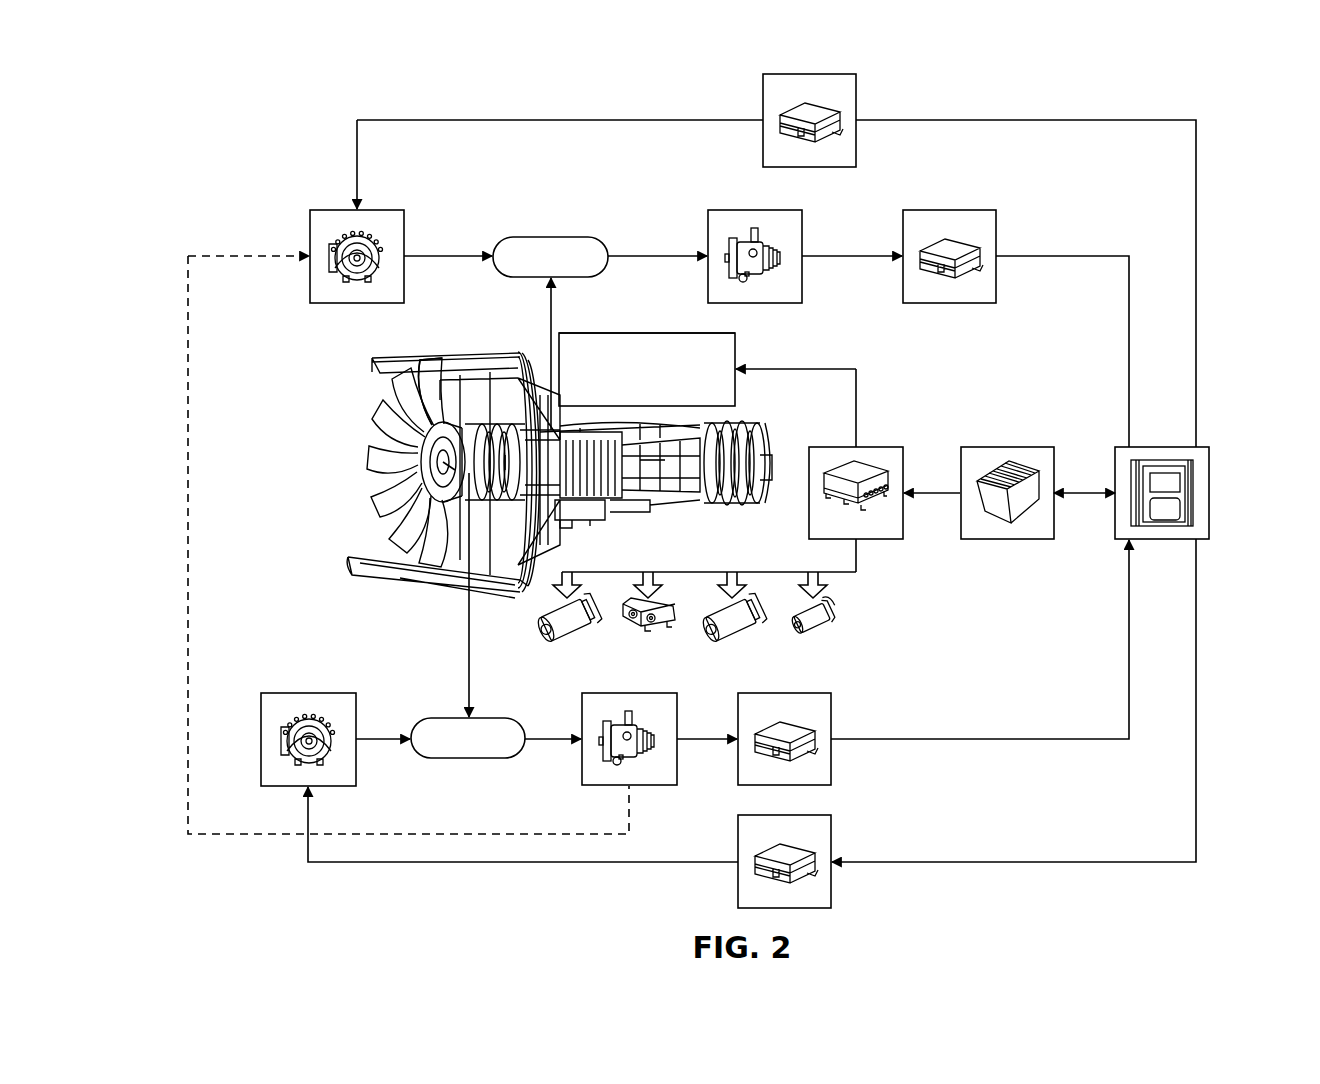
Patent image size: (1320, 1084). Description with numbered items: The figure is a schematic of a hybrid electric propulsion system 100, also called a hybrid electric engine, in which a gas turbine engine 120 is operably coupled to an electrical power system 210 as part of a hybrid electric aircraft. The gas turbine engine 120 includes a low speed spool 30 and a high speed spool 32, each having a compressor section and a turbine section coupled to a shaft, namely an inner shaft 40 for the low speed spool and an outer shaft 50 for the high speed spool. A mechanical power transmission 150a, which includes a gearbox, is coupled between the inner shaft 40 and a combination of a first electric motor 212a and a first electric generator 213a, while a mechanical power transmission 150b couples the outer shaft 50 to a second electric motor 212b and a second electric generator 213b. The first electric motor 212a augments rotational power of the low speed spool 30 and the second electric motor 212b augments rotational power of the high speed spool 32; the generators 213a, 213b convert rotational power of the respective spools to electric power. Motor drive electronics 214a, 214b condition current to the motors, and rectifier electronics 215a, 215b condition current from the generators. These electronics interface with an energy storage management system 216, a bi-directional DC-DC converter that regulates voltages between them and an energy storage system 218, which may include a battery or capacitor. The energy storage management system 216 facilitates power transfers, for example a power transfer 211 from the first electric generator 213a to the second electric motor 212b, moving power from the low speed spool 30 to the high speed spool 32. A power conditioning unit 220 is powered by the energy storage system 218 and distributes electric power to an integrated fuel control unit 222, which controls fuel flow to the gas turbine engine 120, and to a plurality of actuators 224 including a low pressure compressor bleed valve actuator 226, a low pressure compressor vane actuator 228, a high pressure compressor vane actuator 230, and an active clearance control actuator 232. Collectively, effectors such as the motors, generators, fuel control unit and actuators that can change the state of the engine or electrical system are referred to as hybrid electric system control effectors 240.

The hybrid electric propulsion system 100 is at (287, 120).
The gas turbine engine 120 is at (287, 358).
The outer shaft 50 is at (450, 405).
The low speed spool 30 is at (501, 462).
The inner shaft 40 is at (453, 473).
The high speed spool 32 is at (652, 467).
The mechanical power transmission 150a is at (446, 718).
The mechanical power transmission 150b is at (557, 237).
The electrical power system 210 is at (618, 318).
The power transfer 211 is at (183, 304).
The first electric motor 212a is at (283, 693).
The second electric motor 212b is at (322, 209).
The first electric generator 213a is at (582, 772).
The second electric generator 213b is at (748, 210).
The motor drive electronics 214a is at (845, 832).
The motor drive electronics 214b is at (790, 74).
The rectifier electronics 215a is at (845, 710).
The rectifier electronics 215b is at (942, 210).
The energy storage management system 216 is at (1212, 497).
The energy storage system 218 is at (1025, 447).
The power conditioning unit 220 is at (845, 447).
The integrated fuel control unit 222 is at (598, 330).
The actuators 224 is at (926, 578).
The low pressure compressor bleed valve actuator 226 is at (557, 637).
The low pressure compressor vane actuator 228 is at (672, 632).
The high pressure compressor vane actuator 230 is at (727, 637).
The active clearance control actuator 232 is at (838, 612).
The hybrid electric system control effectors 240 is at (1033, 412).